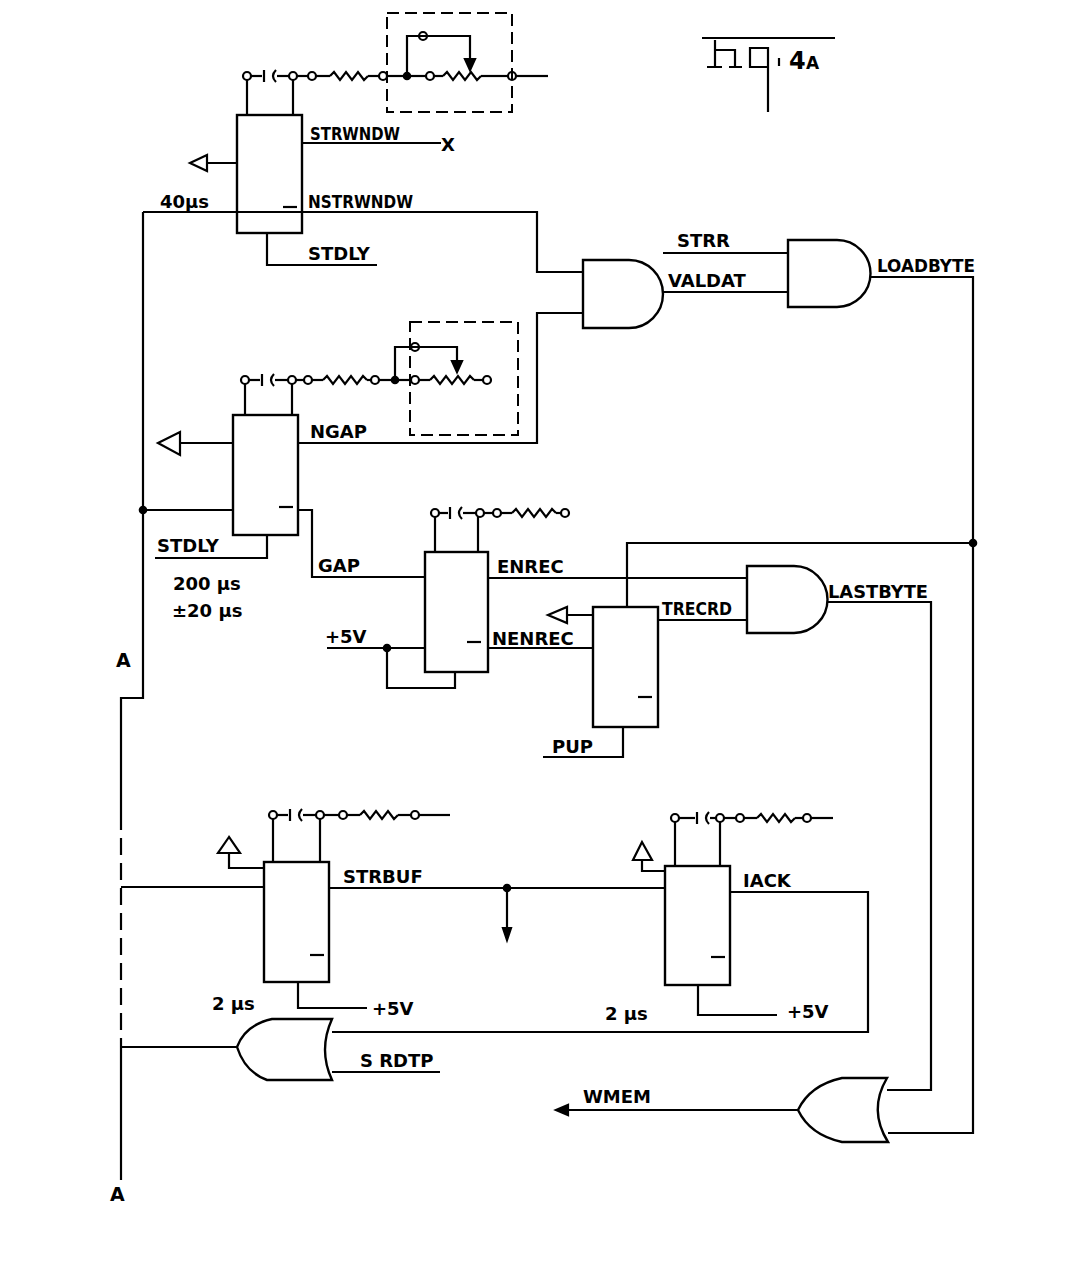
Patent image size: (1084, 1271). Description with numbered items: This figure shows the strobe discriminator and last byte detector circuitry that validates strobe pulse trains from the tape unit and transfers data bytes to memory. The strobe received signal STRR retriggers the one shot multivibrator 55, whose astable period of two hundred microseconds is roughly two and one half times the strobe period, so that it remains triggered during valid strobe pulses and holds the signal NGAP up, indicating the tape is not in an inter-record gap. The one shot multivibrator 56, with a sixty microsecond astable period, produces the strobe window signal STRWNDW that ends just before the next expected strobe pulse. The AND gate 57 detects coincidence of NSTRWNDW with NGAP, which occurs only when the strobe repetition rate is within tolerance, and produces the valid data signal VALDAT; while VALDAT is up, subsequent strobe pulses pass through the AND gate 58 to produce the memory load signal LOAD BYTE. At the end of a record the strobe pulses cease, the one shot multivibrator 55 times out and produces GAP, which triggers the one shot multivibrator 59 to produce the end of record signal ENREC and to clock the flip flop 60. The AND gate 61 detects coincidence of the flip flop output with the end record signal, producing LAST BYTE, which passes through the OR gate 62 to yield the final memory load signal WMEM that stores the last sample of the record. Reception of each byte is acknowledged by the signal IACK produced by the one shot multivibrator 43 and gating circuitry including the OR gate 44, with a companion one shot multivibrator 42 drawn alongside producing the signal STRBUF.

The one-shot multivibrator (2 microsecond, STRBUF) 42 is at (329, 950).
The one shot multivibrator 43 is at (665, 940).
The OR gate 44 is at (272, 1080).
The one shot multivibrator 55 is at (233, 487).
The one shot multivibrator 56 is at (237, 133).
The AND gate 57 is at (603, 260).
The AND gate 58 is at (836, 240).
The one shot multivibrator 59 is at (425, 615).
The flip flop 60 is at (658, 687).
The AND gate 61 is at (772, 633).
The OR gate 62 is at (850, 1078).